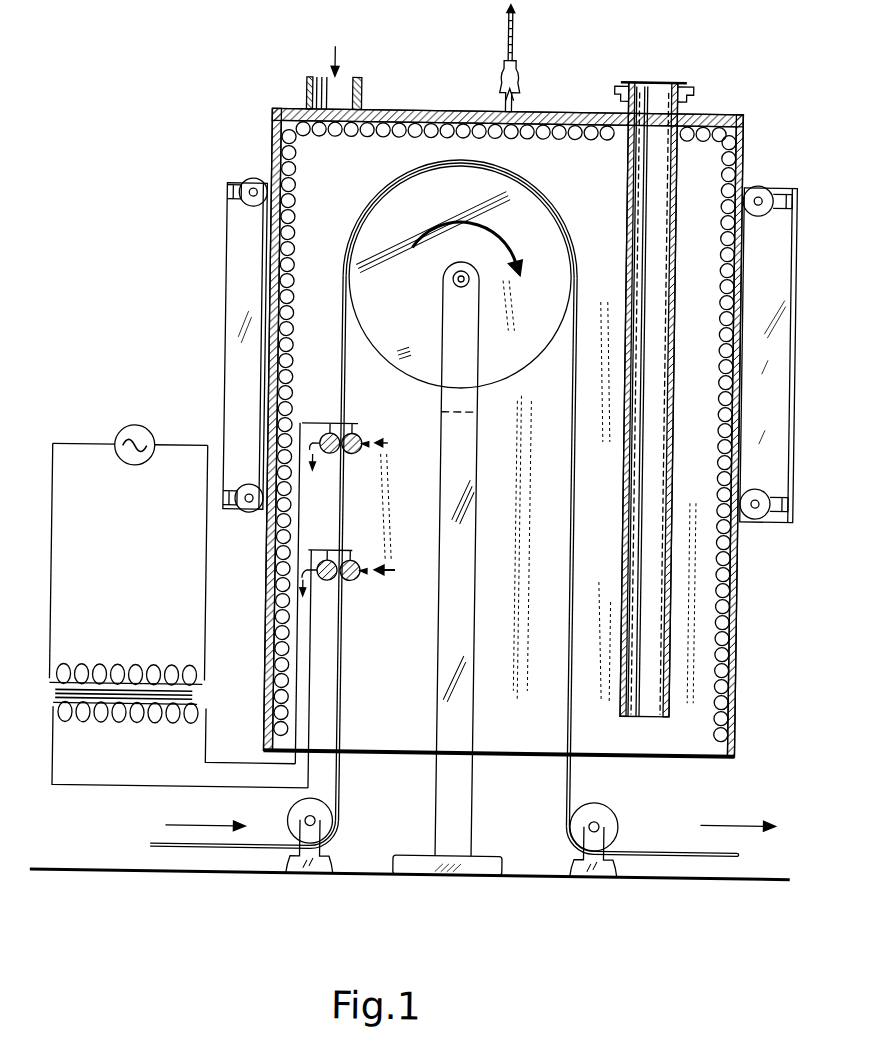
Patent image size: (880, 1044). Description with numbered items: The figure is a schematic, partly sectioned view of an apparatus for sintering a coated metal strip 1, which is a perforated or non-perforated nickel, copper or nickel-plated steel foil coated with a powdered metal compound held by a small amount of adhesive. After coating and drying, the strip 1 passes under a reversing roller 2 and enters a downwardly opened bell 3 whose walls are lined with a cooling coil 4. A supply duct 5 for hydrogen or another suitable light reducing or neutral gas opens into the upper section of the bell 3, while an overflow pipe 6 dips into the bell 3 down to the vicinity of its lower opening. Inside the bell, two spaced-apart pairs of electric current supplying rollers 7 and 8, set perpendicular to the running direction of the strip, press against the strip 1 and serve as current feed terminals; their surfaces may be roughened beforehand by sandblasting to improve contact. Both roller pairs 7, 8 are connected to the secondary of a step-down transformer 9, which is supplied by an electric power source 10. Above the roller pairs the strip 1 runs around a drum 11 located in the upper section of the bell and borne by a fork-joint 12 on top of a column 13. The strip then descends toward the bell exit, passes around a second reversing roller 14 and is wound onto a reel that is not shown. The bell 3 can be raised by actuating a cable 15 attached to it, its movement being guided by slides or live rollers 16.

The strip 1 is at (347, 784).
The reversing roller 2 is at (301, 820).
The bell 3 is at (738, 636).
The cooling coil 4 is at (729, 579).
The supply duct 5 is at (300, 82).
The overflow pipe 6 is at (649, 97).
The pair of electric current supplying rollers 7 is at (359, 441).
The pair of electric current supplying rollers 8 is at (351, 583).
The step-down transformer 9 is at (208, 692).
The electric power source 10 is at (129, 431).
The drum 11 is at (502, 204).
The fork-joint 12 is at (452, 330).
The column 13 is at (460, 505).
The reversing roller 14 is at (614, 820).
The cable 15 is at (506, 49).
The slides or live rollers 16 is at (248, 188).